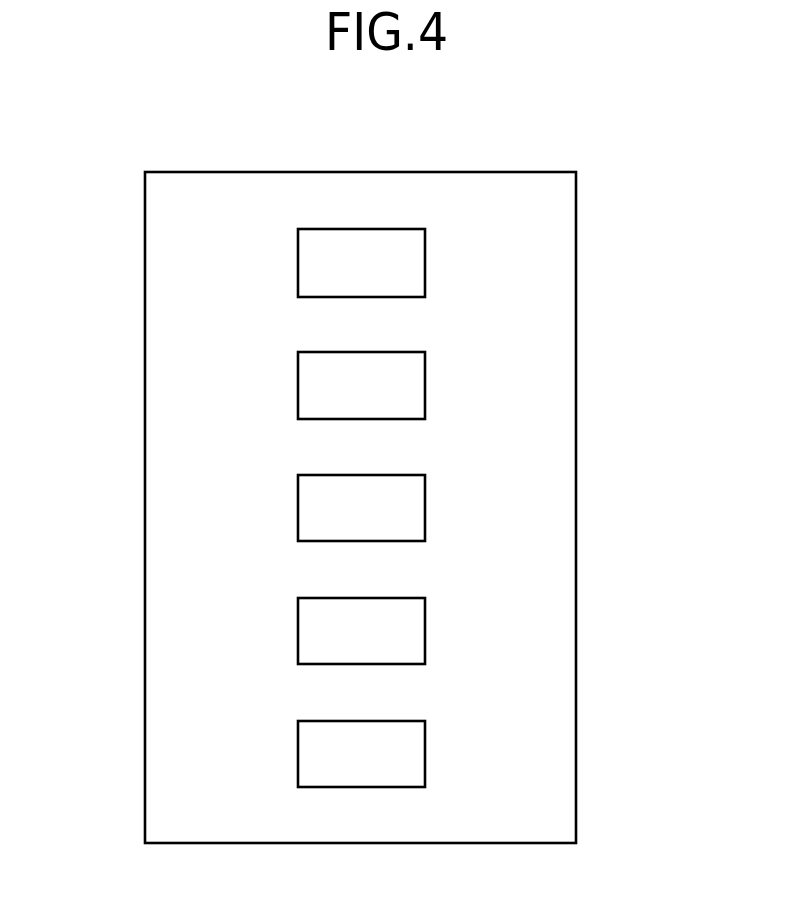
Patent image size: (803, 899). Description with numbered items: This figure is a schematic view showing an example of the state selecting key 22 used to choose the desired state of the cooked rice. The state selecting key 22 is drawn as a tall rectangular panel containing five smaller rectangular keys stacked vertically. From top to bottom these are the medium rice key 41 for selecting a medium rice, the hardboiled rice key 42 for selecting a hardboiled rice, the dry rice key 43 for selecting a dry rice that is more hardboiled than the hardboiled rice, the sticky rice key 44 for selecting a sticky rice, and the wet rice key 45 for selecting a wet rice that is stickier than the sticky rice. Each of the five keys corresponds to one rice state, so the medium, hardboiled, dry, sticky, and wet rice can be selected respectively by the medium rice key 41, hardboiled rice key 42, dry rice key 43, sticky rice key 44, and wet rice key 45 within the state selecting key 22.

The state selecting key 22 is at (90, 146).
The medium rice key 41 is at (404, 264).
The hardboiled rice key 42 is at (404, 386).
The dry rice key 43 is at (404, 509).
The sticky rice key 44 is at (404, 631).
The wet rice key 45 is at (404, 753).